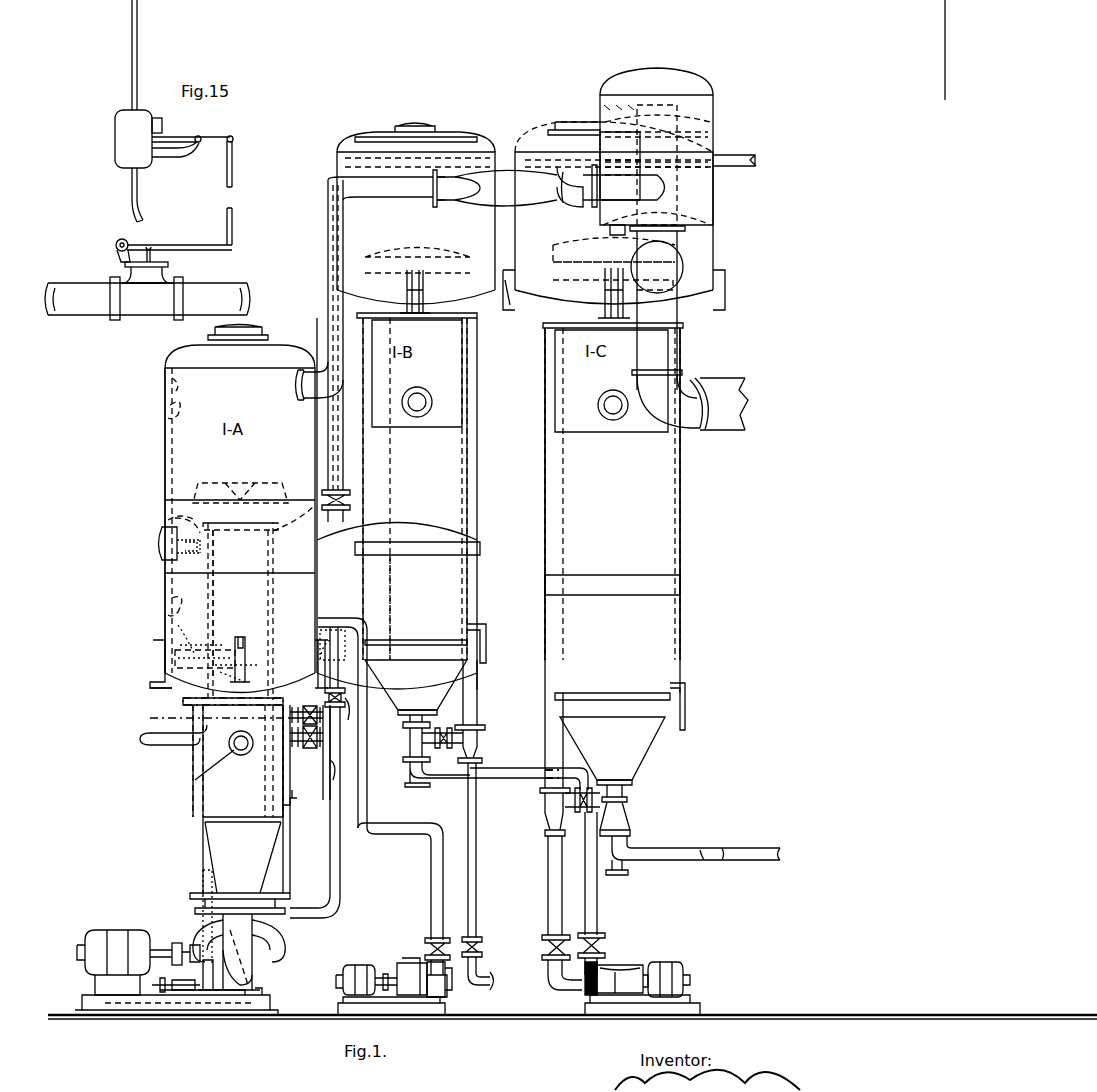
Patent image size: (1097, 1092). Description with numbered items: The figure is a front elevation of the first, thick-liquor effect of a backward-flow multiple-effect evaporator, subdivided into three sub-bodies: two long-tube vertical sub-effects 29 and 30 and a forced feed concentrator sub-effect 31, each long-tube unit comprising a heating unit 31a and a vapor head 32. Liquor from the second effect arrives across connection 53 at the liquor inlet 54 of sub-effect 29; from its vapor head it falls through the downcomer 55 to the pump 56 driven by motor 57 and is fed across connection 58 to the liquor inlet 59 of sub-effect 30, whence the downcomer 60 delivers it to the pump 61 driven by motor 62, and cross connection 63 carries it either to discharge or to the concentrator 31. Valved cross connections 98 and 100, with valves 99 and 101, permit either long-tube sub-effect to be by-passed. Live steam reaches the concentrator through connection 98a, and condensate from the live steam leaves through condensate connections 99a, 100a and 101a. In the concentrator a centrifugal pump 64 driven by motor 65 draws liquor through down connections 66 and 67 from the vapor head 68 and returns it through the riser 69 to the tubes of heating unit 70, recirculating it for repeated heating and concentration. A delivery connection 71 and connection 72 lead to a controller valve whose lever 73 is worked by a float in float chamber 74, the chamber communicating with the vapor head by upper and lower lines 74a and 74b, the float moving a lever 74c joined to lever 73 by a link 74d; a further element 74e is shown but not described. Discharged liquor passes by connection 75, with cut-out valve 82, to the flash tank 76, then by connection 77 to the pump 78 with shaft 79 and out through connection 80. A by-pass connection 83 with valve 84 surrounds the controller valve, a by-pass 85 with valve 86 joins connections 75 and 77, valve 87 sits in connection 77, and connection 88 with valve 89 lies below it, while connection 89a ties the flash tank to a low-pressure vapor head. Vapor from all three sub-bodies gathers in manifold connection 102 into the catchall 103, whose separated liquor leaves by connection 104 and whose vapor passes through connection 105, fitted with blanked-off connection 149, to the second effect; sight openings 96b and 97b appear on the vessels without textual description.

In FIG. 1, the sub-effect I-C 29 is at (698, 503).
In FIG. 1, the sub-effect I-B 30 is at (488, 474).
In FIG. 1, the forced feed evaporator sub-effect I-A 31 is at (156, 455).
In FIG. 1, the heating unit 31a is at (448, 512).
In FIG. 1, the vapor head 32 is at (531, 225).
In FIG. 1, the connection 53 is at (715, 848).
In FIG. 1, the liquor inlet 54 is at (625, 822).
In FIG. 1, the downcomer 55 is at (540, 730).
In FIG. 1, the pump 56 is at (605, 964).
In FIG. 1, the motor 57 is at (660, 955).
In FIG. 1, the connection 58 is at (590, 895).
In FIG. 1, the liquor inlet 59 is at (410, 757).
In FIG. 1, the downcomer 60 is at (472, 700).
In FIG. 1, the pump 61 is at (426, 968).
In FIG. 1, the motor 62 is at (364, 965).
In FIG. 1, the cross connection 63 is at (432, 893).
In FIG. 1, the centrifugal pump 64 is at (239, 952).
In FIG. 1, the motor 65 is at (118, 930).
In FIG. 1, the down connection 66 is at (278, 838).
In FIG. 1, the down connection 67 is at (200, 838).
In FIG. 1, the vapor head 68 is at (240, 513).
In FIG. 1, the riser 69 is at (230, 857).
In FIG. 1, the heating unit 70 is at (238, 761).
In FIG. 1, the delivery connection 71 is at (175, 748).
In FIG. 15, the connection 72 is at (100, 275).
In FIG. 1, the connection 72 is at (140, 741).
In FIG. 15, the controller valve lever 73 is at (205, 247).
In FIG. 1, the controller valve lever 73 is at (211, 712).
In FIG. 15, the float chamber 74 is at (127, 140).
In FIG. 1, the float chamber 74 is at (160, 549).
In FIG. 15, the upper line 74a is at (137, 45).
In FIG. 1, the upper line 74a is at (168, 412).
In FIG. 15, the lower line 74b is at (115, 195).
In FIG. 1, the lower line 74b is at (170, 597).
In FIG. 15, the lever 74c is at (210, 139).
In FIG. 15, the link 74d is at (233, 172).
In FIG. 1, the link 74d is at (216, 617).
In FIG. 1, the float guide 74e is at (172, 520).
In FIG. 1, the connection 75 is at (300, 612).
In FIG. 1, the flash tank 76 is at (397, 614).
In FIG. 1, the connection 77 is at (340, 855).
In FIG. 1, the pump 78 is at (207, 975).
In FIG. 1, the shaft 79 is at (156, 988).
In FIG. 1, the connection 80 is at (203, 886).
In FIG. 1, the cut-out valve 82 is at (222, 681).
In FIG. 1, the by-pass connection 83 is at (168, 698).
In FIG. 1, the valve 84 is at (199, 636).
In FIG. 1, the by-pass connection 85 is at (312, 755).
In FIG. 1, the valve 86 is at (300, 705).
In FIG. 1, the valve 87 is at (342, 713).
In FIG. 1, the connection 88 is at (250, 752).
In FIG. 1, the valve 89 is at (312, 752).
In FIG. 1, the connection 89a is at (326, 438).
In FIG. 1, the sight glass 96b is at (407, 394).
In FIG. 1, the sight glass 97b is at (607, 394).
In FIG. 1, the cross connection 98 is at (600, 800).
In FIG. 1, the live steam connection 98a is at (198, 773).
In FIG. 1, the valve 99 is at (574, 815).
In FIG. 1, the condensate connection 99a is at (305, 794).
In FIG. 1, the cross connection 100 is at (460, 760).
In FIG. 1, the condensate connection 100a is at (488, 655).
In FIG. 1, the valve 101 is at (447, 728).
In FIG. 1, the condensate connection 101a is at (688, 717).
In FIG. 1, the manifold connection 102 is at (455, 205).
In FIG. 1, the catchall 103 is at (657, 149).
In FIG. 1, the connection 104 is at (608, 228).
In FIG. 1, the connection 105 is at (728, 375).
In FIG. 1, the blanked-off connection 149 is at (685, 262).